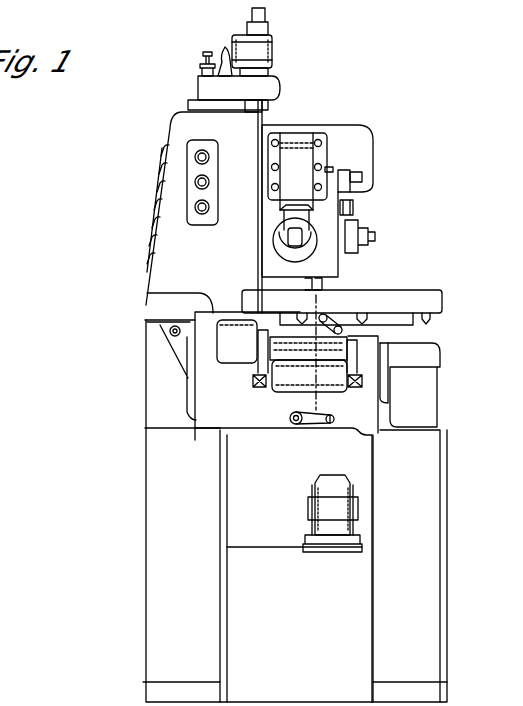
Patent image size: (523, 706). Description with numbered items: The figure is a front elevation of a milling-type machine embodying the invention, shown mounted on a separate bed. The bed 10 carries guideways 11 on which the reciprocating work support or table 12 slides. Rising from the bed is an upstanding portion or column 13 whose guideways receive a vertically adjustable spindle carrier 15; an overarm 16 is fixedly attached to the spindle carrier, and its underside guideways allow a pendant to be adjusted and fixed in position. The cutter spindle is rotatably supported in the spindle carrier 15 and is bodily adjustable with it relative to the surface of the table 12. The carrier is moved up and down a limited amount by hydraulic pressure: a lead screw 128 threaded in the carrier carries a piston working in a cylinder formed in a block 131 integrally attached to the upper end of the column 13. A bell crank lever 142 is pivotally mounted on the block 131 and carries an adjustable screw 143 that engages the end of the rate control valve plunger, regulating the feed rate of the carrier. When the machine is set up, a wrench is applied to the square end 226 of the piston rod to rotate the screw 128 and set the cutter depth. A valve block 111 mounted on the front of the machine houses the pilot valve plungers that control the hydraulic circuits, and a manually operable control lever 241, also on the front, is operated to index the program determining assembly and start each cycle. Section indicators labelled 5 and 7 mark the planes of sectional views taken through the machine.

The bed 10 is at (145, 383).
The guideways 11 is at (150, 293).
The table 12 is at (435, 298).
The upstanding portion 13 is at (176, 124).
The spindle carrier 15 is at (378, 160).
The overarm 16 is at (296, 155).
The valve block 111 is at (340, 352).
The lead screw 128 is at (263, 106).
The block 131 is at (281, 86).
The bell crank lever 142 is at (226, 46).
The adjustable screw 143 is at (204, 53).
The square end 226 is at (266, 15).
The manually operable control lever 241 is at (340, 318).
The section line 5 is at (300, 300).
The section line 7 is at (235, 374).